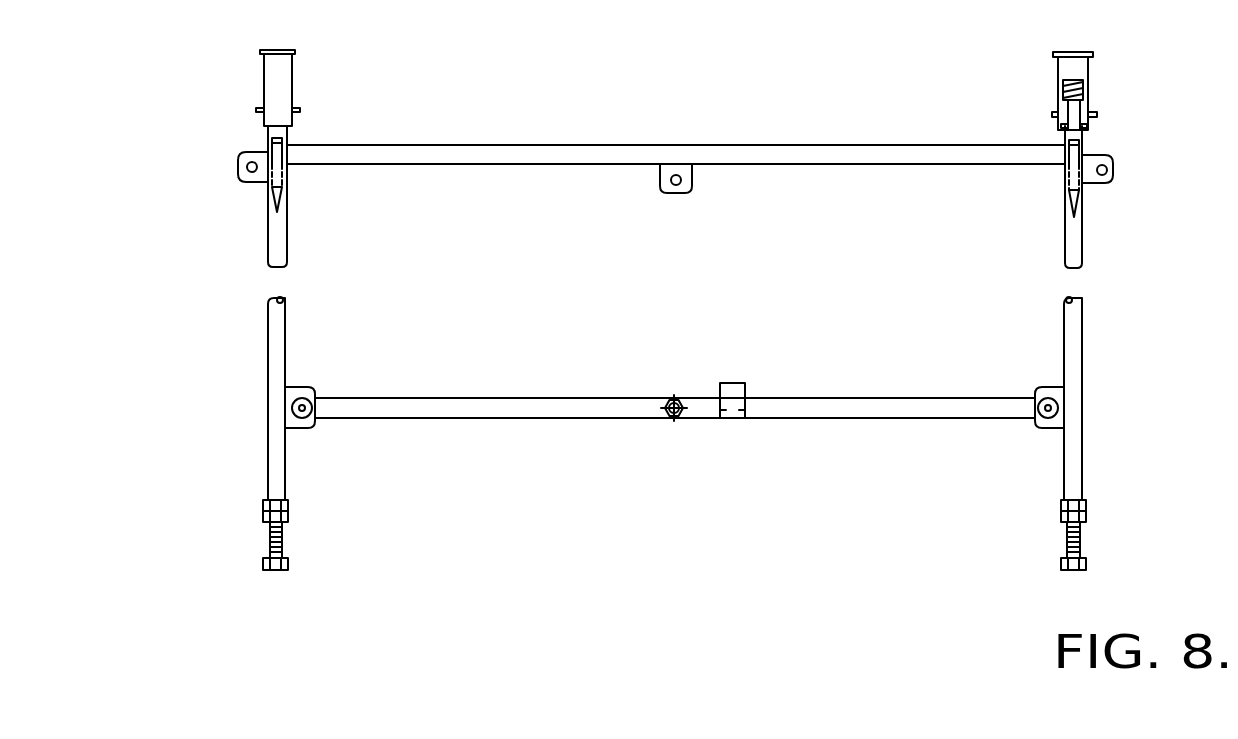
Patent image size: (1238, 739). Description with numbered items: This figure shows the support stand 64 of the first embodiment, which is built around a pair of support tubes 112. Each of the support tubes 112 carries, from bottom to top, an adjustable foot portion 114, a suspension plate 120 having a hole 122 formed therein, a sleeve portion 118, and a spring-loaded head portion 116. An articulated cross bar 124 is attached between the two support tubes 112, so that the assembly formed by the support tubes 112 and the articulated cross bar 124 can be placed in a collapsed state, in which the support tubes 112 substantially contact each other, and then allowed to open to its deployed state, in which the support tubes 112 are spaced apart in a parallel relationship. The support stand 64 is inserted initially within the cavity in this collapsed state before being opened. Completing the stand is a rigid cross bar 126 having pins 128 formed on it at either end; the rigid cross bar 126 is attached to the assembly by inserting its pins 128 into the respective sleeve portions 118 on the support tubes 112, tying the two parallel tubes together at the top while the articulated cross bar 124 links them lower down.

The support stand 64 is at (767, 277).
The support tube 112 is at (277, 328).
The adjustable foot portion 114 is at (285, 545).
The spring-loaded head portion 116 is at (293, 82).
The sleeve portion 118 is at (287, 200).
The suspension plate 120 is at (243, 153).
The hole 122 is at (243, 167).
The articulated cross bar 124 is at (518, 398).
The rigid cross bar 126 is at (723, 149).
The pin 128 is at (282, 203).